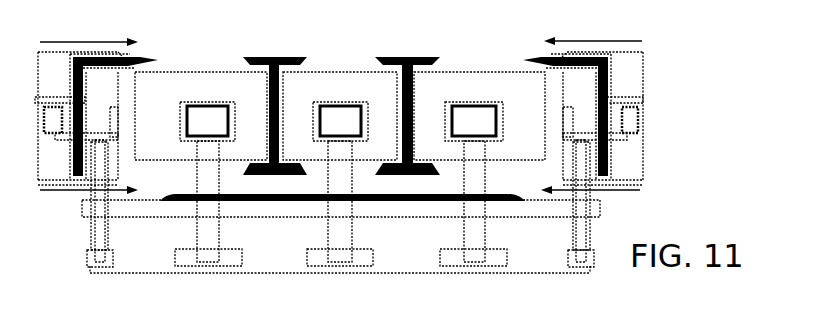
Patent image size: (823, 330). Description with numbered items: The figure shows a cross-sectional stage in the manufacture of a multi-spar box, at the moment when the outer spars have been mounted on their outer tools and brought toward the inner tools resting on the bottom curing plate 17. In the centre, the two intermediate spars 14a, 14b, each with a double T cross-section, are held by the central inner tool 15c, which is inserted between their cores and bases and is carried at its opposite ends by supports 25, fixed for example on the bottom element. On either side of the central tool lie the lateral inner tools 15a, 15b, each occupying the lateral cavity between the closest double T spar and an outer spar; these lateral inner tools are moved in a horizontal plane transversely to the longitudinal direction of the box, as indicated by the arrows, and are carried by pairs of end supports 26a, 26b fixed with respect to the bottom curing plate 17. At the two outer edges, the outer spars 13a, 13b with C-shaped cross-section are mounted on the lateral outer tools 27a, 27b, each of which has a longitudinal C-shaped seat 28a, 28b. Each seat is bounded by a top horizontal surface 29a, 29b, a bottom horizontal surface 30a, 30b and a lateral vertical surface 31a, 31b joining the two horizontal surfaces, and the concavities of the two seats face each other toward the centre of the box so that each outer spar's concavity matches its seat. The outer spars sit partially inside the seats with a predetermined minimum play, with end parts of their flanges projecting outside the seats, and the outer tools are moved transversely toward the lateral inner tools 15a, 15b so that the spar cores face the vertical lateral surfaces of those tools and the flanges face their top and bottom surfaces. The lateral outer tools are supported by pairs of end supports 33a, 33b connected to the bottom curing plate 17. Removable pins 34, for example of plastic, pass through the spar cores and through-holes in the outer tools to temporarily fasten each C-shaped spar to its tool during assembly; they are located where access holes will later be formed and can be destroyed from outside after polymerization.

The outer lateral spar 13a is at (128, 79).
The outer lateral spar 13b is at (545, 78).
The intermediate spar 14a is at (287, 58).
The intermediate spar 14b is at (420, 58).
The lateral inner tool 15a is at (217, 80).
The lateral inner tool 15b is at (487, 84).
The central inner tool 15c is at (348, 80).
The bottom curing plate 17 is at (280, 211).
The support 25 is at (342, 258).
The end support 26a is at (208, 264).
The end support 26b is at (472, 262).
The lateral outer tool 27a is at (50, 182).
The lateral outer tool 27b is at (628, 157).
The C-shaped seat 28a is at (85, 186).
The C-shaped seat 28b is at (617, 77).
The top horizontal surface 29a is at (102, 56).
The top horizontal surface 29b is at (592, 56).
The bottom horizontal surface 30a is at (108, 203).
The bottom horizontal surface 30b is at (598, 184).
The lateral vertical surface 31a is at (67, 78).
The lateral vertical surface 31b is at (608, 84).
The end support 33a is at (99, 268).
The end support 33b is at (571, 272).
The removable pin 34 is at (85, 100).